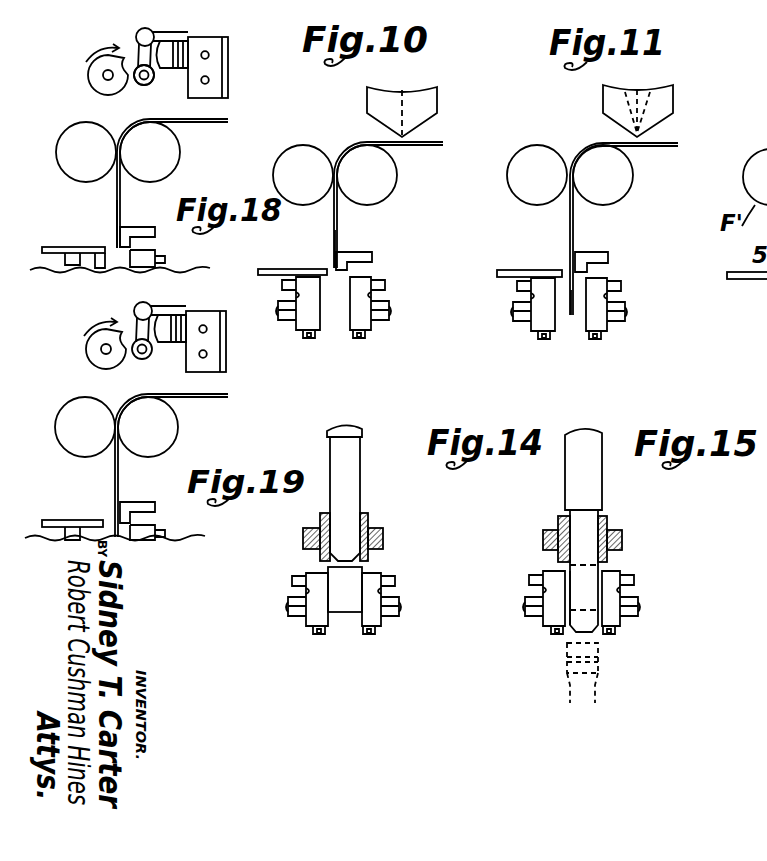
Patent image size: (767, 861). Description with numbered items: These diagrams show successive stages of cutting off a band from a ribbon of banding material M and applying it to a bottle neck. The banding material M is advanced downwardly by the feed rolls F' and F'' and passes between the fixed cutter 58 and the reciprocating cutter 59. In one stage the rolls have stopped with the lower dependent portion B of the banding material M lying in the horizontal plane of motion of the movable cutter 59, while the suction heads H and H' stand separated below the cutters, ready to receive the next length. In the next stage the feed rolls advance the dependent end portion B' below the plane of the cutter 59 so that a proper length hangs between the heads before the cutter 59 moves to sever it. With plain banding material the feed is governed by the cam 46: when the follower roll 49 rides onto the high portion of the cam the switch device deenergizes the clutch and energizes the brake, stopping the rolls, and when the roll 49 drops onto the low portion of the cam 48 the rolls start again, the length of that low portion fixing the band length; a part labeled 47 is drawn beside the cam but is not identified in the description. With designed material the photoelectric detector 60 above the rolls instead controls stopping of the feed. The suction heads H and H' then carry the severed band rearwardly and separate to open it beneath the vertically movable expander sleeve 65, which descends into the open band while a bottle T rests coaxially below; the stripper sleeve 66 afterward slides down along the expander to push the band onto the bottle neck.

In FIG. 18, the cam 46 is at (85, 58).
In FIG. 18, the cam 47 is at (140, 90).
In FIG. 18, the cam 48 is at (92, 81).
In FIG. 18, the follower roll 49 is at (153, 79).
In FIG. 18, the banding material M is at (228, 120).
In FIG. 19, the banding material M is at (228, 395).
In FIG. 10, the banding material M is at (412, 148).
In FIG. 11, the banding material M is at (653, 150).
In FIG. 18, the feed roll F' is at (73, 147).
In FIG. 19, the feed roll F' is at (79, 446).
In FIG. 10, the feed roll F' is at (303, 157).
In FIG. 18, the right feed roller F'' is at (181, 152).
In FIG. 19, the right feed roller F'' is at (175, 427).
In FIG. 10, the right feed roller F'' is at (391, 183).
In FIG. 18, the dependent portion of the banding material B is at (76, 216).
In FIG. 10, the dependent portion of the banding material B is at (315, 242).
In FIG. 11, the dependent portion of the banding material B is at (616, 280).
In FIG. 14, the dependent portion of the banding material B is at (306, 584).
In FIG. 15, the dependent portion of the banding material B is at (525, 592).
In FIG. 19, the dependent end portion of the banding material B' is at (162, 516).
In FIG. 18, the fixed cutter 58 is at (138, 228).
In FIG. 10, the fixed cutter 58 is at (357, 252).
In FIG. 11, the fixed cutter 58 is at (597, 252).
In FIG. 18, the reciprocating cutter 59 is at (97, 233).
In FIG. 19, the reciprocating cutter 59 is at (97, 508).
In FIG. 10, the reciprocating cutter 59 is at (307, 273).
In FIG. 11, the reciprocating cutter 59 is at (546, 274).
In FIG. 10, the photoelectric detector 60 is at (432, 102).
In FIG. 11, the photoelectric detector 60 is at (675, 108).
In FIG. 14, the expander sleeve 65 is at (355, 477).
In FIG. 15, the expander sleeve 65 is at (595, 483).
In FIG. 14, the stripper sleeve 66 is at (378, 530).
In FIG. 10, the suction head H is at (304, 334).
In FIG. 14, the suction head H is at (307, 628).
In FIG. 15, the suction head H is at (535, 635).
In FIG. 10, the suction head H' is at (384, 322).
In FIG. 14, the suction head H' is at (387, 628).
In FIG. 15, the suction head H' is at (637, 591).
In FIG. 15, the bottle T is at (600, 690).